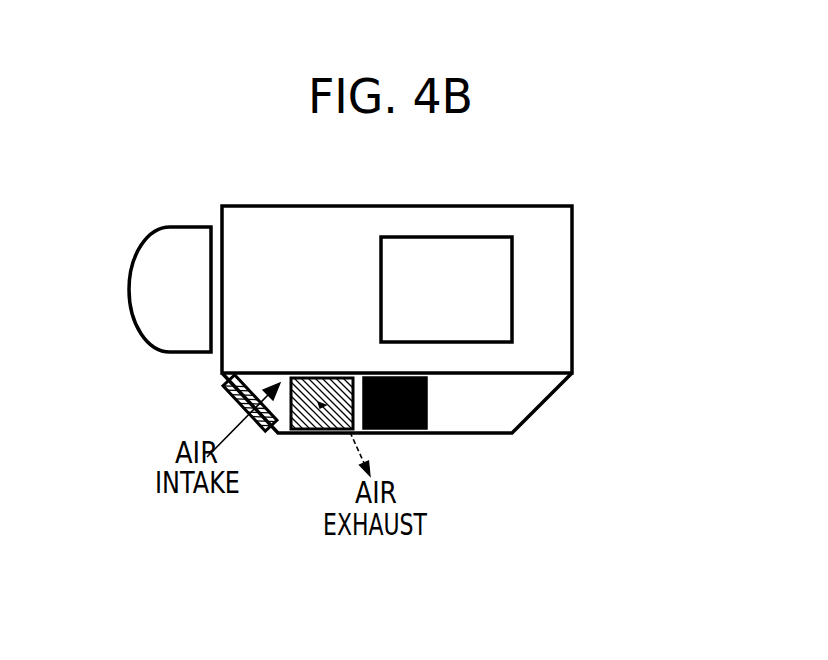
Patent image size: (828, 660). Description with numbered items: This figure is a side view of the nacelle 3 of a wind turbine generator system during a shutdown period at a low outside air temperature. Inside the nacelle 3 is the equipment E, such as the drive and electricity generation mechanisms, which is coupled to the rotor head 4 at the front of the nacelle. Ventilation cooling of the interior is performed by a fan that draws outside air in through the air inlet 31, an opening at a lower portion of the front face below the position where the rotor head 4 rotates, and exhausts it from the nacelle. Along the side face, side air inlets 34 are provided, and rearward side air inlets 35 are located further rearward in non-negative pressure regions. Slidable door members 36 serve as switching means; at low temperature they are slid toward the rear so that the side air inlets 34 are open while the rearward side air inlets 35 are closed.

The nacelle 3 is at (573, 291).
The rotor head 4 is at (131, 275).
The equipment E is at (450, 236).
The air inlet 31 is at (228, 390).
The side air inlet 34 is at (312, 430).
The rearward side air inlet 35 is at (436, 432).
The slidable door member 36 is at (427, 413).